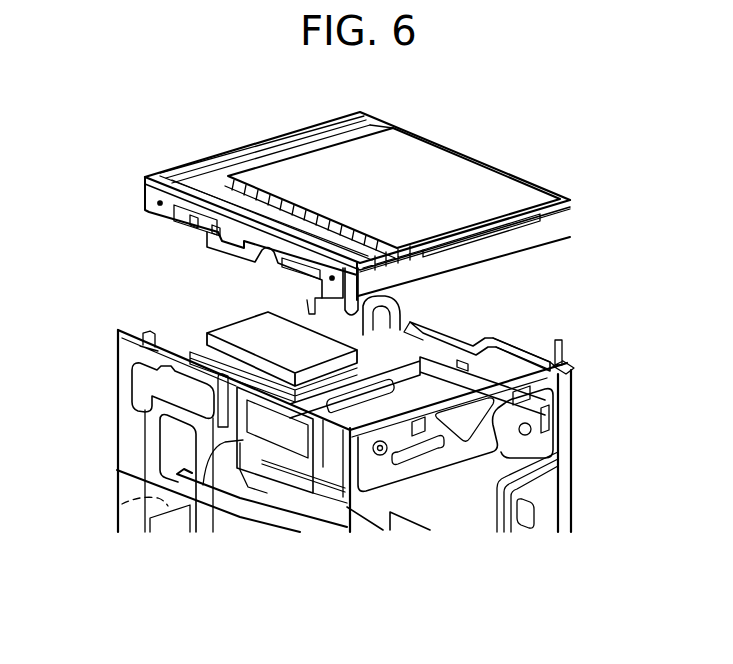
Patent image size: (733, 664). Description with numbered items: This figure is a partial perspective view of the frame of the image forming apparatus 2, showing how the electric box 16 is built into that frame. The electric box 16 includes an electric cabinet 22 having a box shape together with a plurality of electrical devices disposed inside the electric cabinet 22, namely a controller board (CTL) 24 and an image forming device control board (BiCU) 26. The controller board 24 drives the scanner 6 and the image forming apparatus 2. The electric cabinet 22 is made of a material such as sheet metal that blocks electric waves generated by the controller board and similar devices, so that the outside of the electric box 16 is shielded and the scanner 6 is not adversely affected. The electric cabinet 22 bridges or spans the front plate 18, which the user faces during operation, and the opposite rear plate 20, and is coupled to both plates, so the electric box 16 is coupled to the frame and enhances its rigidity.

The image forming apparatus 2 is at (191, 132).
The scanner 6 is at (449, 163).
The electric box 16 is at (578, 391).
The front plate 18 is at (544, 453).
The rear plate 20 is at (120, 505).
The electric cabinet 22 is at (507, 339).
The controller board (CTL) 24 is at (390, 353).
The image forming device control board (BiCU) 26 is at (247, 326).